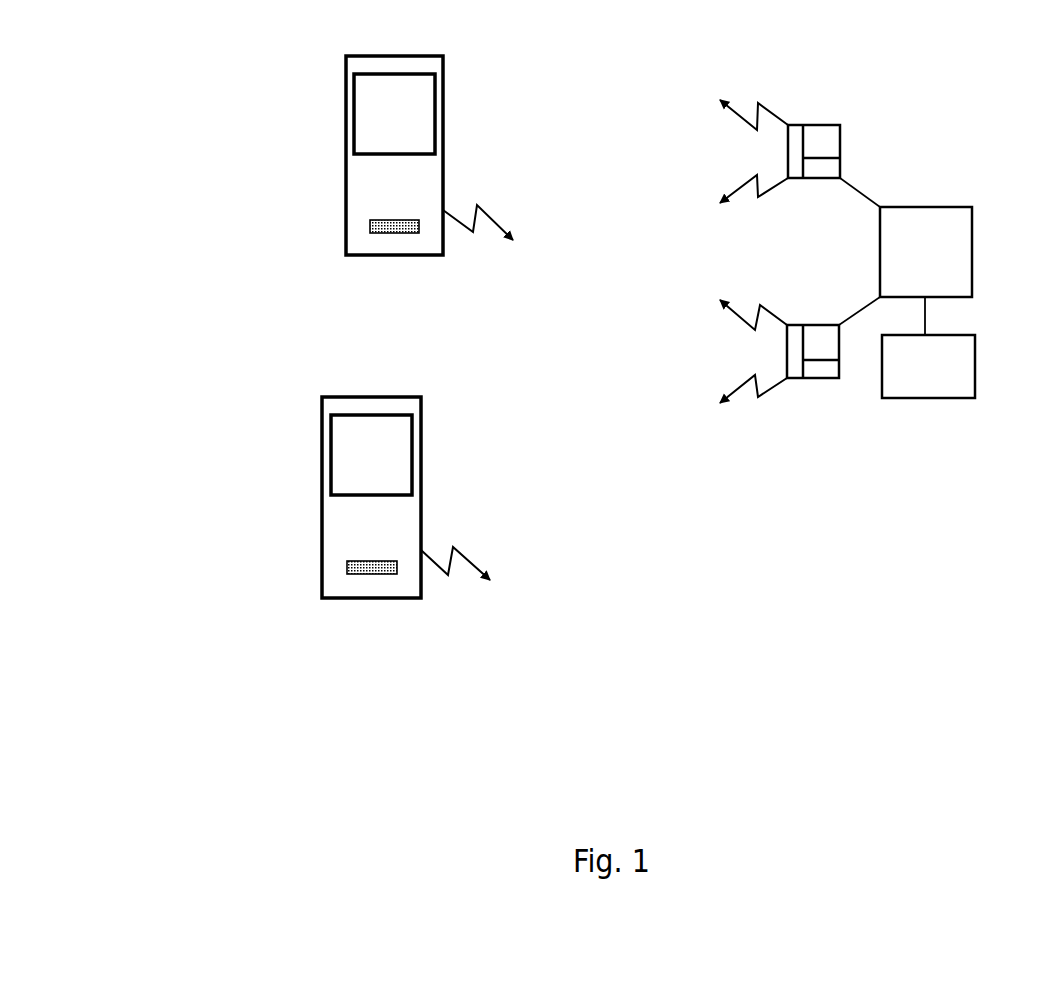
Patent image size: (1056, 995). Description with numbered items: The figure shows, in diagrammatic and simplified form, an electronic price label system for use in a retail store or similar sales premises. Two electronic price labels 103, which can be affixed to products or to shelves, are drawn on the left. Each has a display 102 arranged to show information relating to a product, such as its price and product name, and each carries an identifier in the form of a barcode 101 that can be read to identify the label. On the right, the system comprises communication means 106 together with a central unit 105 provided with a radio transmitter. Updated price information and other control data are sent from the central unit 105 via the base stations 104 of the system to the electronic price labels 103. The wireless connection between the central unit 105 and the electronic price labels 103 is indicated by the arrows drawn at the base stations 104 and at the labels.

The barcode 101 is at (377, 223).
The display 102 is at (393, 92).
The electronic price label 103 is at (373, 177).
The base station 104 is at (818, 148).
The central unit 105 is at (948, 232).
The communication means 106 is at (948, 387).